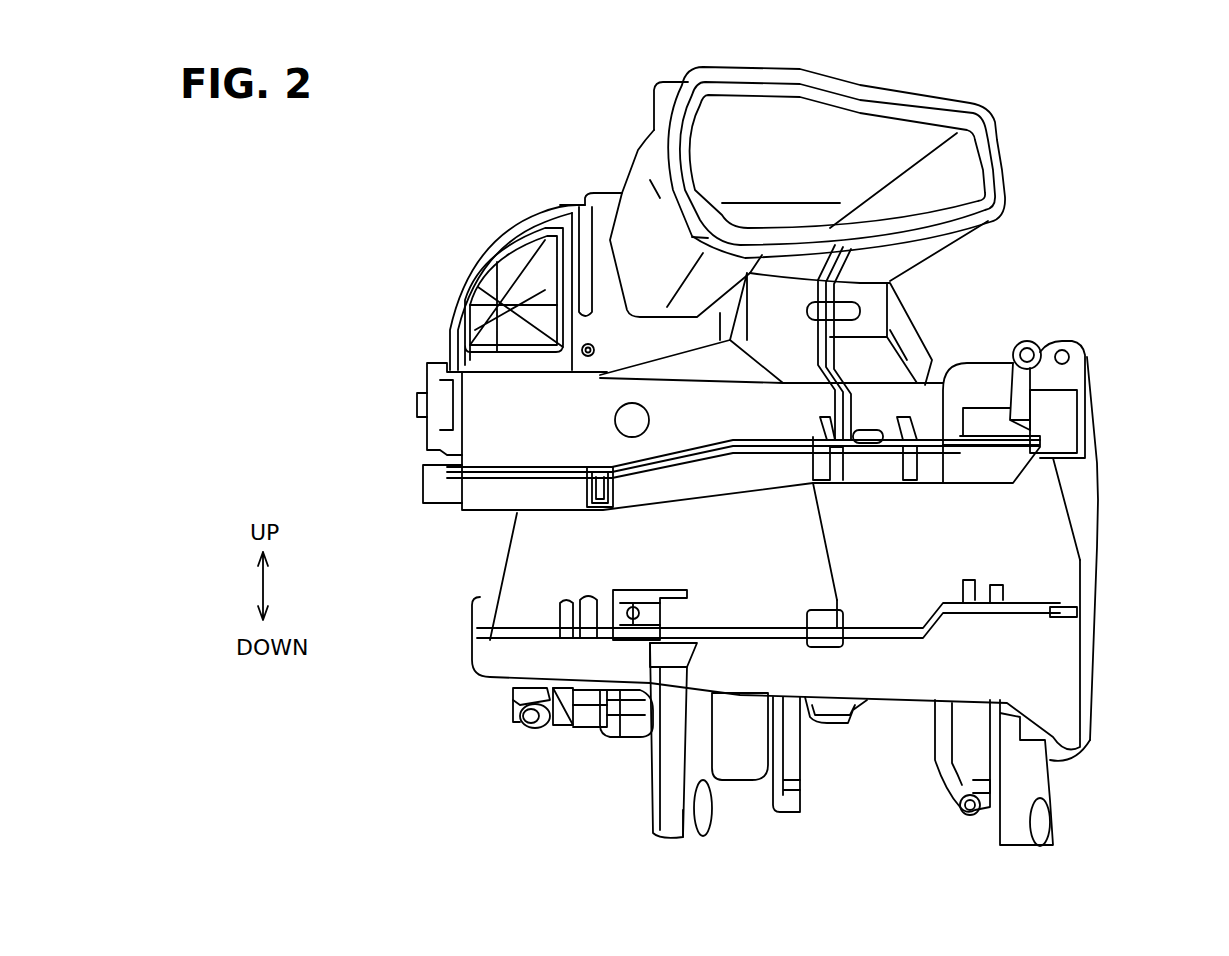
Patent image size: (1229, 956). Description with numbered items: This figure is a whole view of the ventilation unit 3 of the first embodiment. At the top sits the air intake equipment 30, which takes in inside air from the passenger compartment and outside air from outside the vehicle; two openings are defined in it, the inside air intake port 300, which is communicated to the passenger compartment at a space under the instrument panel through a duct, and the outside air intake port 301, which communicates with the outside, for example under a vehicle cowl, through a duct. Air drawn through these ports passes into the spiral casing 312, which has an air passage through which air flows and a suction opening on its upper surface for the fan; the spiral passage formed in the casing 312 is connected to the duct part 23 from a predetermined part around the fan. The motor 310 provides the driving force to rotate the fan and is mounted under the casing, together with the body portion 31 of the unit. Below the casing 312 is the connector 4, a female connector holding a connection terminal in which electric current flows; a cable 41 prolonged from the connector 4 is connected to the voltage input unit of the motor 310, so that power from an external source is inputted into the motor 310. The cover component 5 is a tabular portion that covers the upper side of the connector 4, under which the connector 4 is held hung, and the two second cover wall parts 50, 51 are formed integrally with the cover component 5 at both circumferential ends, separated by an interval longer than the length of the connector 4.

The ventilation unit 3 is at (1062, 214).
The air intake equipment 30 is at (515, 206).
The inside air intake port 300 is at (455, 325).
The outside air intake port 301 is at (910, 117).
The duct part 23 is at (1040, 493).
The lower housing body 31 is at (485, 575).
The motor 310 is at (733, 740).
The casing 312 is at (875, 683).
The cover component 5 is at (510, 688).
The second cover wall part 51 is at (517, 705).
The second cover wall part 50 is at (565, 705).
The connector 4 is at (573, 715).
The cable 41 is at (623, 730).